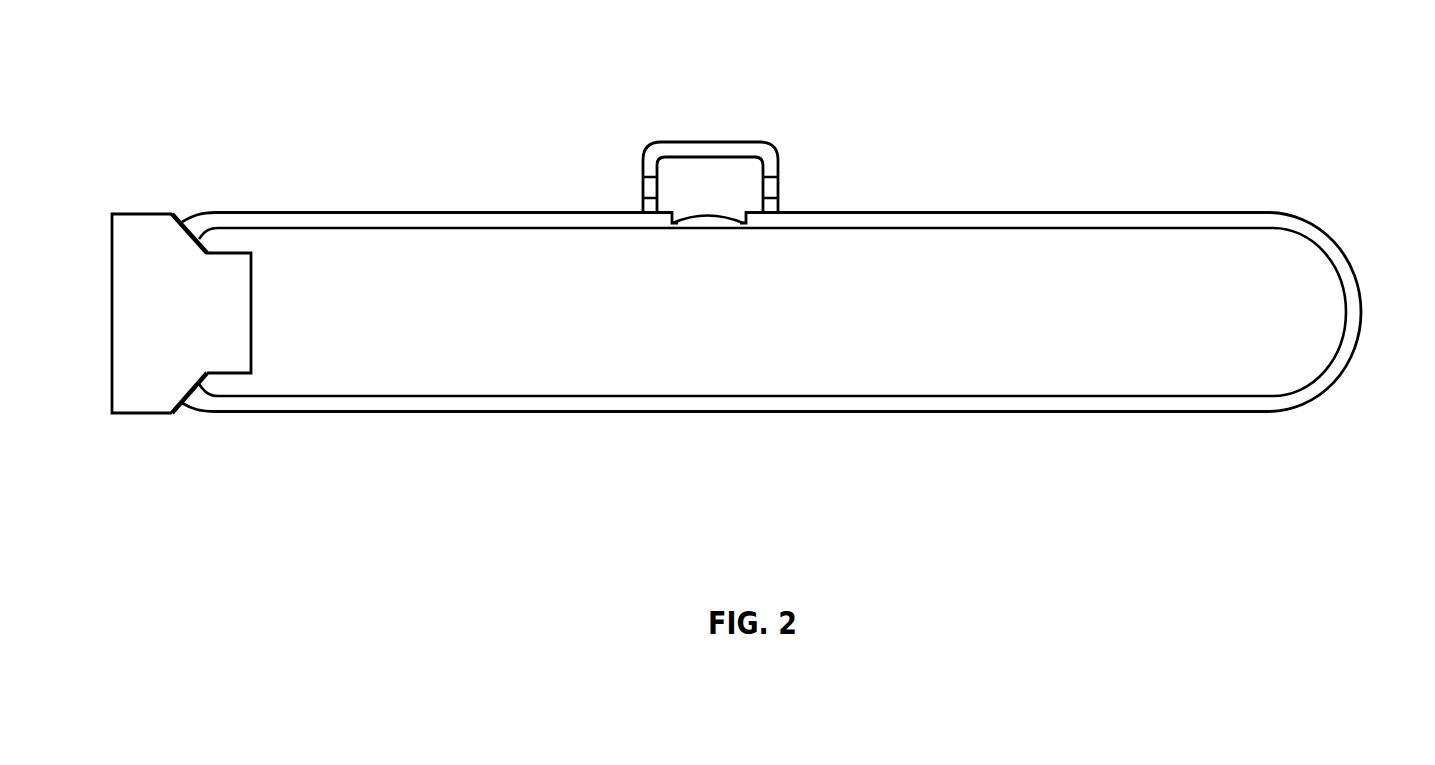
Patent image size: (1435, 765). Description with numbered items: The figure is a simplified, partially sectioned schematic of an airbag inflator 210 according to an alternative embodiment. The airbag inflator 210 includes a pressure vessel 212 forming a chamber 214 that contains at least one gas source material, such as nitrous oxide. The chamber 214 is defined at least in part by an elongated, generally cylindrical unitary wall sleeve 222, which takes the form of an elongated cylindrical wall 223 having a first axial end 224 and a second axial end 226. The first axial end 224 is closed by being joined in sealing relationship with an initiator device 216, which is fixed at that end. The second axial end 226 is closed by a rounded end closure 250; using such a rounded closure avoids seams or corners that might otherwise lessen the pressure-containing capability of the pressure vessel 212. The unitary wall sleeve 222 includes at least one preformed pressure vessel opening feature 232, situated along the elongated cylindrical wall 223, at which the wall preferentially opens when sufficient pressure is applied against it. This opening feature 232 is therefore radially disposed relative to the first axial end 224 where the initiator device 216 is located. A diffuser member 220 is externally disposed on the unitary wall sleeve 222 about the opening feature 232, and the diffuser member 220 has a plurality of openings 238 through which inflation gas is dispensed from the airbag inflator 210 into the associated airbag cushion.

The airbag inflator 210 is at (1078, 137).
The pressure vessel 212 is at (437, 210).
The chamber 214 is at (843, 365).
The initiator device 216 is at (152, 238).
The diffuser member 220 is at (717, 145).
The unitary wall sleeve 222 is at (412, 417).
The elongated cylindrical wall 223 is at (645, 395).
The first axial end 224 is at (193, 427).
The second axial end 226 is at (1276, 417).
The preformed pressure vessel opening feature 232 is at (723, 219).
The openings 238 is at (643, 183).
The rounded end closure 250 is at (1357, 326).